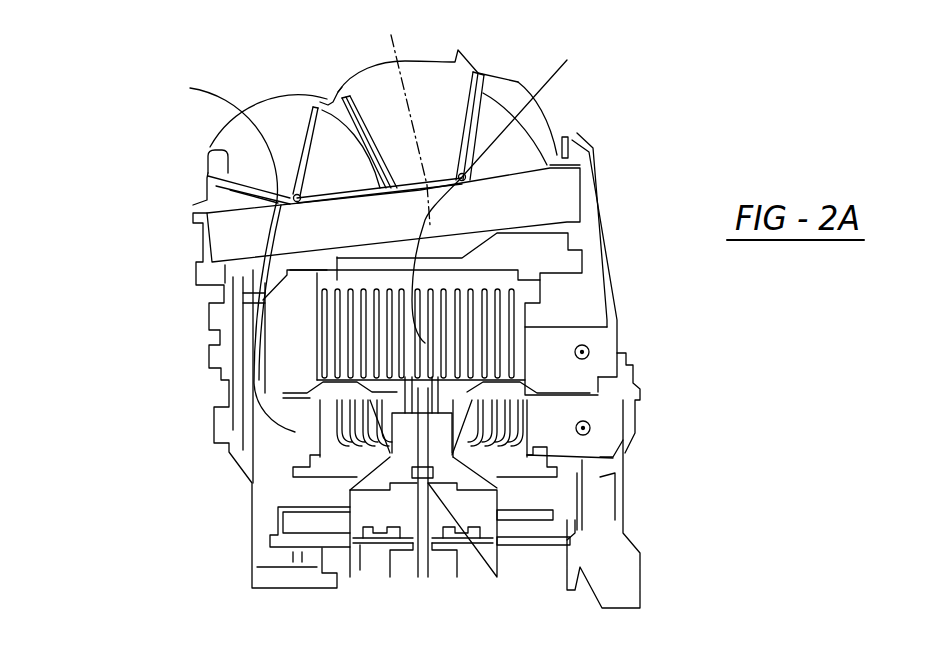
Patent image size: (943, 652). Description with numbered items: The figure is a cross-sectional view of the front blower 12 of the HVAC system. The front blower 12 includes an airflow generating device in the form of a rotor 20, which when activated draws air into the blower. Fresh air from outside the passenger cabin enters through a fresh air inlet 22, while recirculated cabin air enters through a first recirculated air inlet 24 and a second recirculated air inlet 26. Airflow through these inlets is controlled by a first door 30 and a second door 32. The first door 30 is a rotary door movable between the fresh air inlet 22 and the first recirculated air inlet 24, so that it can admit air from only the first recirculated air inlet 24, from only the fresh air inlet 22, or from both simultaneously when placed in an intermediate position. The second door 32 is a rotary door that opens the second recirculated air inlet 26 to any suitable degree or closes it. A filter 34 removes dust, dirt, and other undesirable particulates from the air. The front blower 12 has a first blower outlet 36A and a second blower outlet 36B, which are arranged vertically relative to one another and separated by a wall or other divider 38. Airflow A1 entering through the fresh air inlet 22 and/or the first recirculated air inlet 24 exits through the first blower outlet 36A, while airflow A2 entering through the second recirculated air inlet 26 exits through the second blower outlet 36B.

The front blower 12 is at (170, 100).
The rotor 20 is at (575, 427).
The fresh air inlet 22 is at (372, 158).
The first recirculated air inlet 24 is at (568, 137).
The second recirculated air inlet 26 is at (212, 148).
The first door 30 is at (565, 137).
The second door 32 is at (305, 130).
The filter 34 is at (552, 198).
The first blower outlet 36A is at (598, 337).
The second blower outlet 36B is at (605, 437).
The divider 38 is at (592, 392).
The airflow A1 is at (568, 351).
The airflow A2 is at (600, 403).